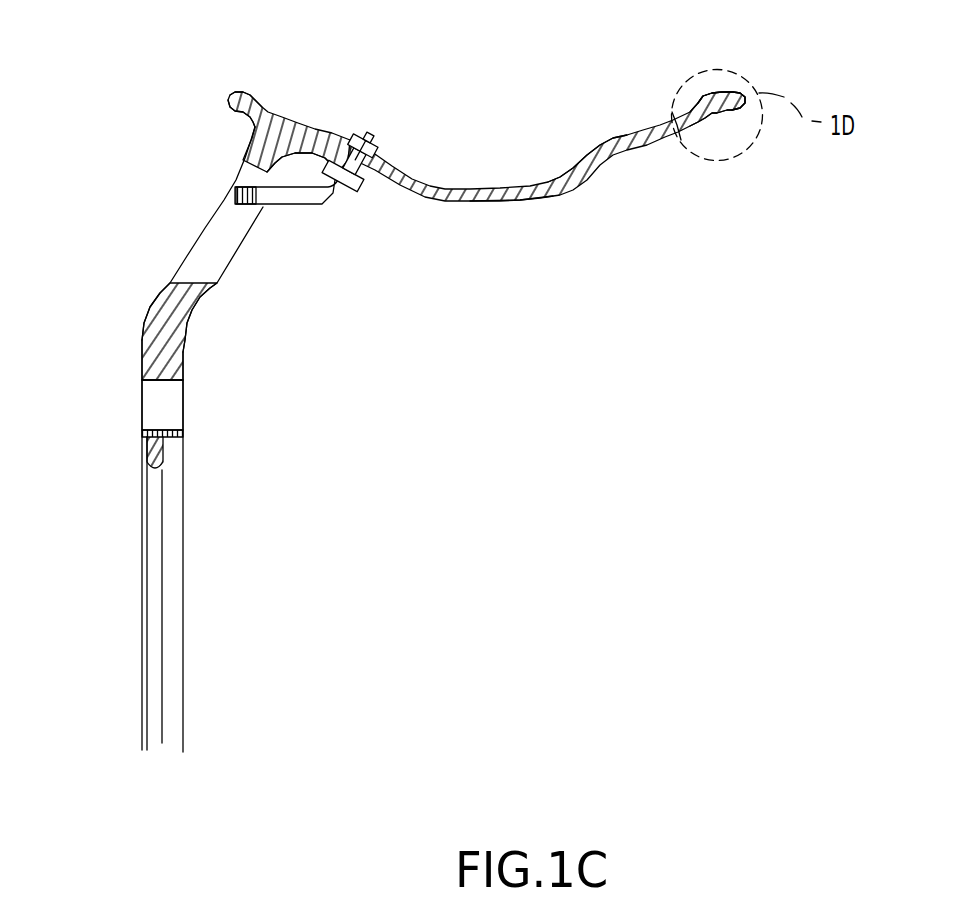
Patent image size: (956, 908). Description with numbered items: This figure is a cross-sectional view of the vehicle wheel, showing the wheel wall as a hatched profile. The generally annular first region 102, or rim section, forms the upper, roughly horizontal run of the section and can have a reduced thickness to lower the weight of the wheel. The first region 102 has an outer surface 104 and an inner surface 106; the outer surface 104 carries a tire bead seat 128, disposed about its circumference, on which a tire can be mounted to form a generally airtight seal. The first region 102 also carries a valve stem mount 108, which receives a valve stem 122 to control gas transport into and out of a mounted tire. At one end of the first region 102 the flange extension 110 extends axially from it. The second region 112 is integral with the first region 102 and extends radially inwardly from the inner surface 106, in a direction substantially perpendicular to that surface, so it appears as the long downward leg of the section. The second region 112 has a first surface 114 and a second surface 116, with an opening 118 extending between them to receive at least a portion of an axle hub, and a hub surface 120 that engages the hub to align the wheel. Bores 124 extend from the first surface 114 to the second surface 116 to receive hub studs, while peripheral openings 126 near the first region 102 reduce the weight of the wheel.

The first region 102 is at (437, 189).
The outer surface 104 is at (526, 189).
The inner surface 106 is at (520, 201).
The valve stem mount 108 is at (366, 137).
The flange extension 110 is at (715, 112).
The second region 112 is at (147, 348).
The first surface 114 is at (155, 303).
The second surface 116 is at (163, 462).
The opening 118 is at (153, 712).
The hub surface 120 is at (162, 745).
The valve stem 122 is at (320, 204).
The bores 124 is at (153, 390).
The peripheral openings 126 is at (230, 223).
The tire bead seat 128 is at (270, 103).